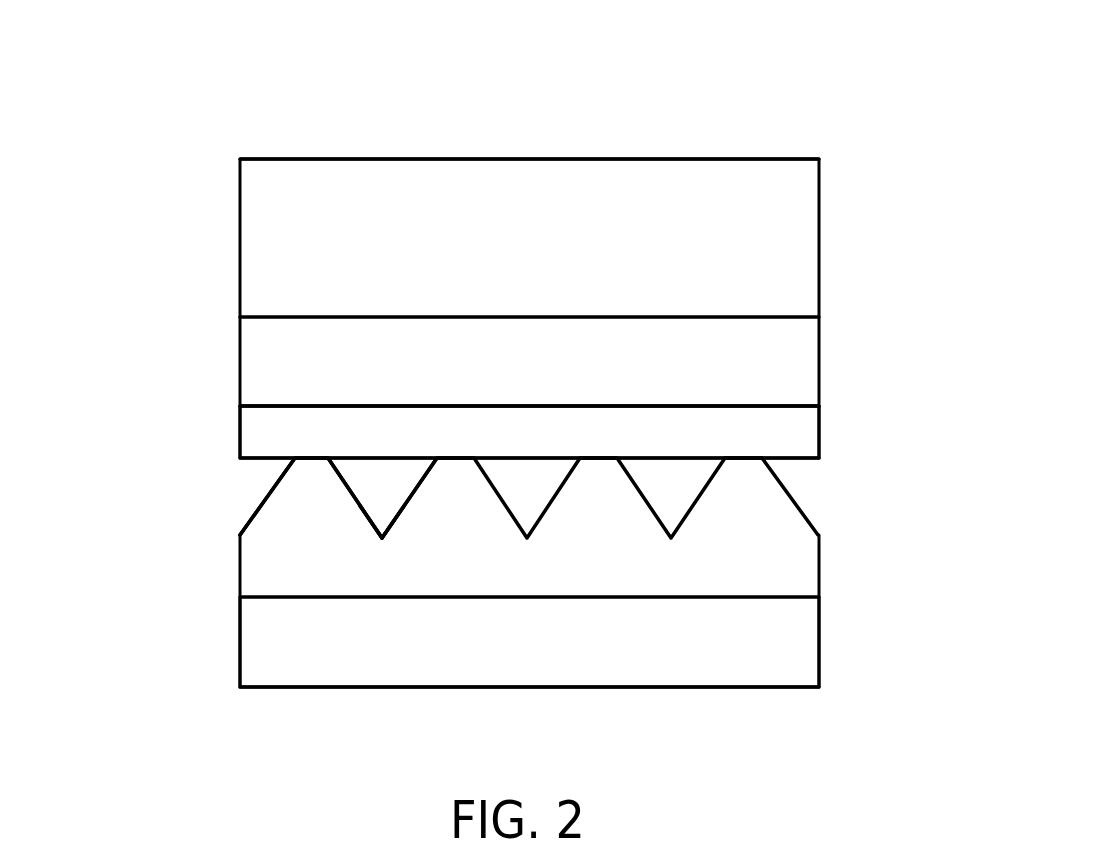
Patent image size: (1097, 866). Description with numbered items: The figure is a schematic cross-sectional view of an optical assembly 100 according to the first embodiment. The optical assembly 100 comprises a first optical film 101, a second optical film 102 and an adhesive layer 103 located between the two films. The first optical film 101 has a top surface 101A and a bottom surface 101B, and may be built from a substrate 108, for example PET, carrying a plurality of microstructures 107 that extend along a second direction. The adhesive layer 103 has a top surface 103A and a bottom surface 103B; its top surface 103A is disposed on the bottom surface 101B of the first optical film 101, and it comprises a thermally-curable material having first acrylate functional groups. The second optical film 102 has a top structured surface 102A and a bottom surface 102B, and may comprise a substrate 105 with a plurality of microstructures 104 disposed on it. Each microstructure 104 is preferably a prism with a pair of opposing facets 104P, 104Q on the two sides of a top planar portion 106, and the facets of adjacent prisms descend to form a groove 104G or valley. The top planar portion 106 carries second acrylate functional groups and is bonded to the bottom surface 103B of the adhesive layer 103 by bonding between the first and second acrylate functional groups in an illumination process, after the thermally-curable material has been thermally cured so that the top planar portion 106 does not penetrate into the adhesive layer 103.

The optical assembly 100 is at (952, 47).
The first optical film 101 is at (535, 267).
The top surface of first optical film 101A is at (683, 158).
The bottom surface of first optical film 101B is at (752, 404).
The second optical film 102 is at (432, 624).
The top structured surface of second optical film 102A is at (260, 510).
The bottom surface of second optical film 102B is at (650, 687).
The adhesive layer 103 is at (589, 418).
The top surface of adhesive layer 103A is at (658, 404).
The bottom surface of adhesive layer 103B is at (787, 462).
The microstructure 104 is at (515, 579).
The facet 104P is at (278, 487).
The facet 104Q is at (347, 490).
The groove 104G is at (382, 540).
The substrate 105 is at (272, 650).
The top planar portion 106 is at (318, 458).
The microstructure 107 is at (273, 215).
The substrate 108 is at (272, 382).